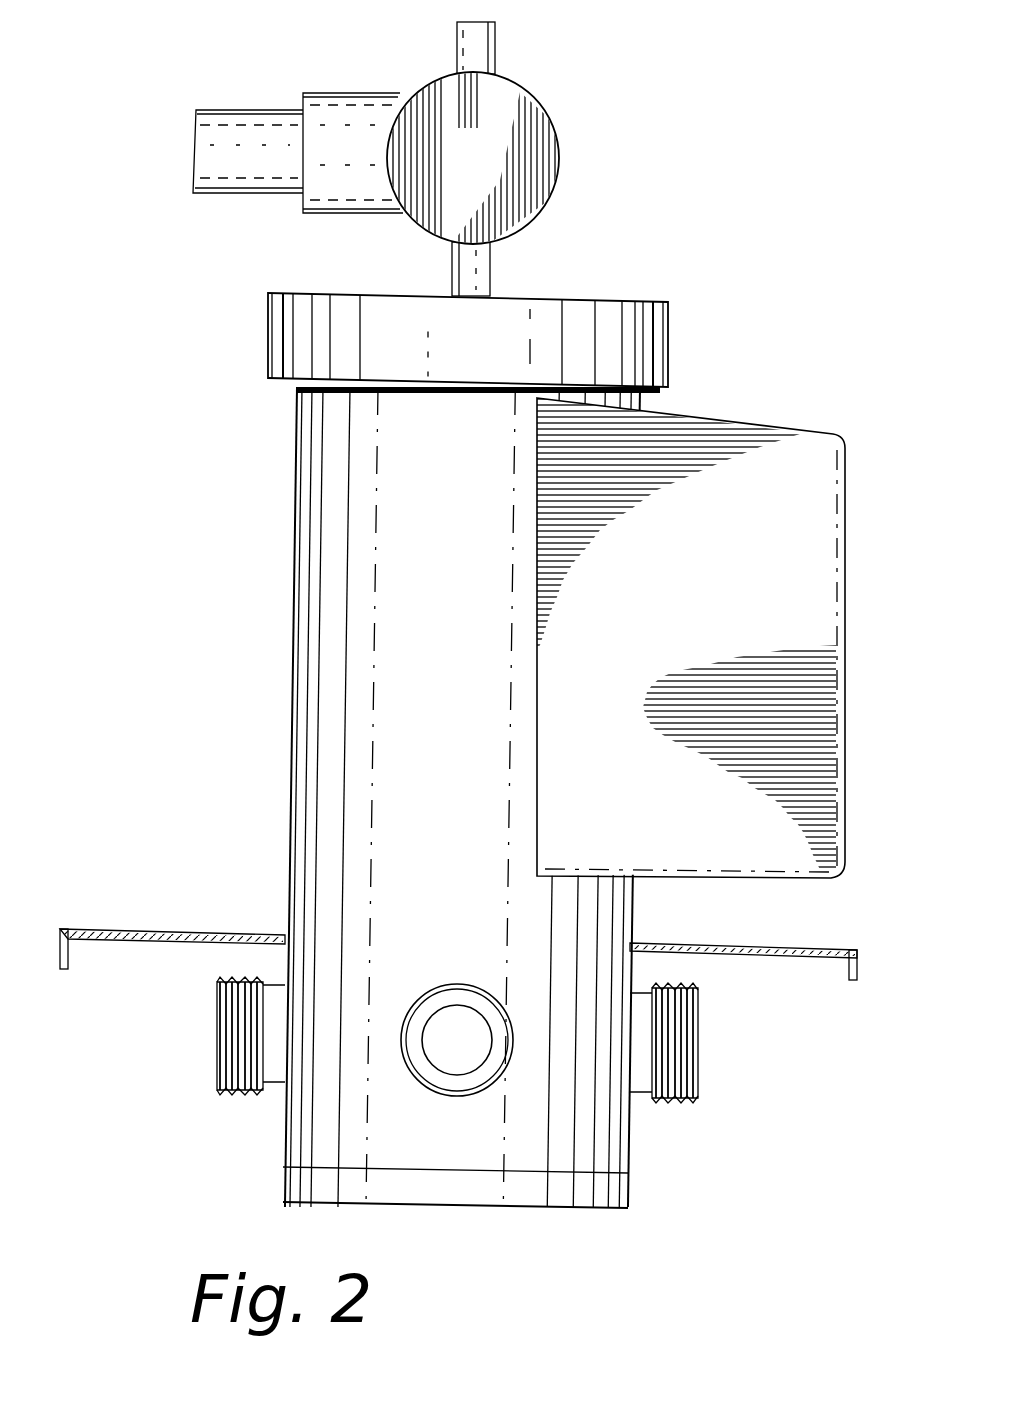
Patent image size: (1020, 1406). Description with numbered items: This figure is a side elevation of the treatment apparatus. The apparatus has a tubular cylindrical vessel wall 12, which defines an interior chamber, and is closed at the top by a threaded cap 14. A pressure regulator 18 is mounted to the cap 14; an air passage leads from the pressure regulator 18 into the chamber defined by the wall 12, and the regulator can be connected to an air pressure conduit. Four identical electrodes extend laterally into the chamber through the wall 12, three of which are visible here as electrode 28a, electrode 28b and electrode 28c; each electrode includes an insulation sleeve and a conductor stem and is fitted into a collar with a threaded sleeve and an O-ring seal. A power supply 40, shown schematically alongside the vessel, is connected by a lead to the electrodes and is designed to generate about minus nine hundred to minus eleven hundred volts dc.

The tubular cylindrical vessel wall 12 is at (303, 562).
The threaded cap 14 is at (645, 327).
The pressure regulator 18 is at (540, 138).
The power supply 40 is at (753, 450).
The electrode 28a is at (685, 1040).
The electrode 28b is at (457, 1080).
The electrode 28c is at (232, 1020).